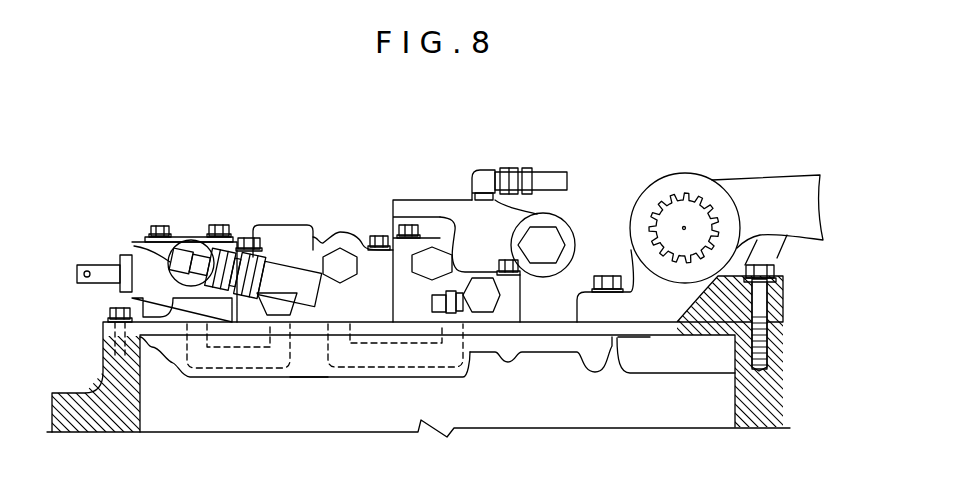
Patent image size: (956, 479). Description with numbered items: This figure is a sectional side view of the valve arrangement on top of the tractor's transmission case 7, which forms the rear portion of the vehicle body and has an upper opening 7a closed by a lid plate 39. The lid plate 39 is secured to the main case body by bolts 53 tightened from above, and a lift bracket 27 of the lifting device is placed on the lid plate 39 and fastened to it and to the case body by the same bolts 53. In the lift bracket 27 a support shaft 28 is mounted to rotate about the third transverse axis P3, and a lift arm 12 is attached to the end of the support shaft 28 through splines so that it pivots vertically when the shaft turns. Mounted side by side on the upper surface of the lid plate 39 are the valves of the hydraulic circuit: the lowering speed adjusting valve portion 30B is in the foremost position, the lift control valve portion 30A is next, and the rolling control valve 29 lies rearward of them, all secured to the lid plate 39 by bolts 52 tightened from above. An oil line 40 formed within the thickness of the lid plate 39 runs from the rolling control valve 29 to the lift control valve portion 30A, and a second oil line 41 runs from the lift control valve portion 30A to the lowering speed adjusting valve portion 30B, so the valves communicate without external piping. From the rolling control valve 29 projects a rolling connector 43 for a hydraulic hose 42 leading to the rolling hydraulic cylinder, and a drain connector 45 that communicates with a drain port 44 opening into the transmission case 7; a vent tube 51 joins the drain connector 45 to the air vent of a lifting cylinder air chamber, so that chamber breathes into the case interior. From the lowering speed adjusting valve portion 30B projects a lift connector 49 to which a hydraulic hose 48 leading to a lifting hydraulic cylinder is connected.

The transmission case 7 is at (73, 400).
The upper opening 7a is at (543, 370).
The lift arm 12 is at (763, 188).
The lift bracket 27 is at (630, 270).
The support shaft 28 is at (653, 218).
The rolling control valve 29 is at (425, 212).
The lift control valve portion 30A is at (307, 230).
The lowering speed adjusting valve portion 30B is at (183, 236).
The lid plate 39 is at (317, 330).
The oil line 40 is at (380, 367).
The oil line 41 is at (237, 368).
The hydraulic hose 42 is at (553, 175).
The rolling connector 43 is at (482, 172).
The drain port 44 is at (427, 365).
The drain connector 45 is at (440, 300).
The hydraulic hose 48 is at (280, 277).
The lift connector 49 is at (150, 253).
The vent tube 51 is at (473, 313).
The bolt 52 is at (158, 226).
The bolt 53 is at (108, 312).
The third transverse axis P3 is at (684, 227).